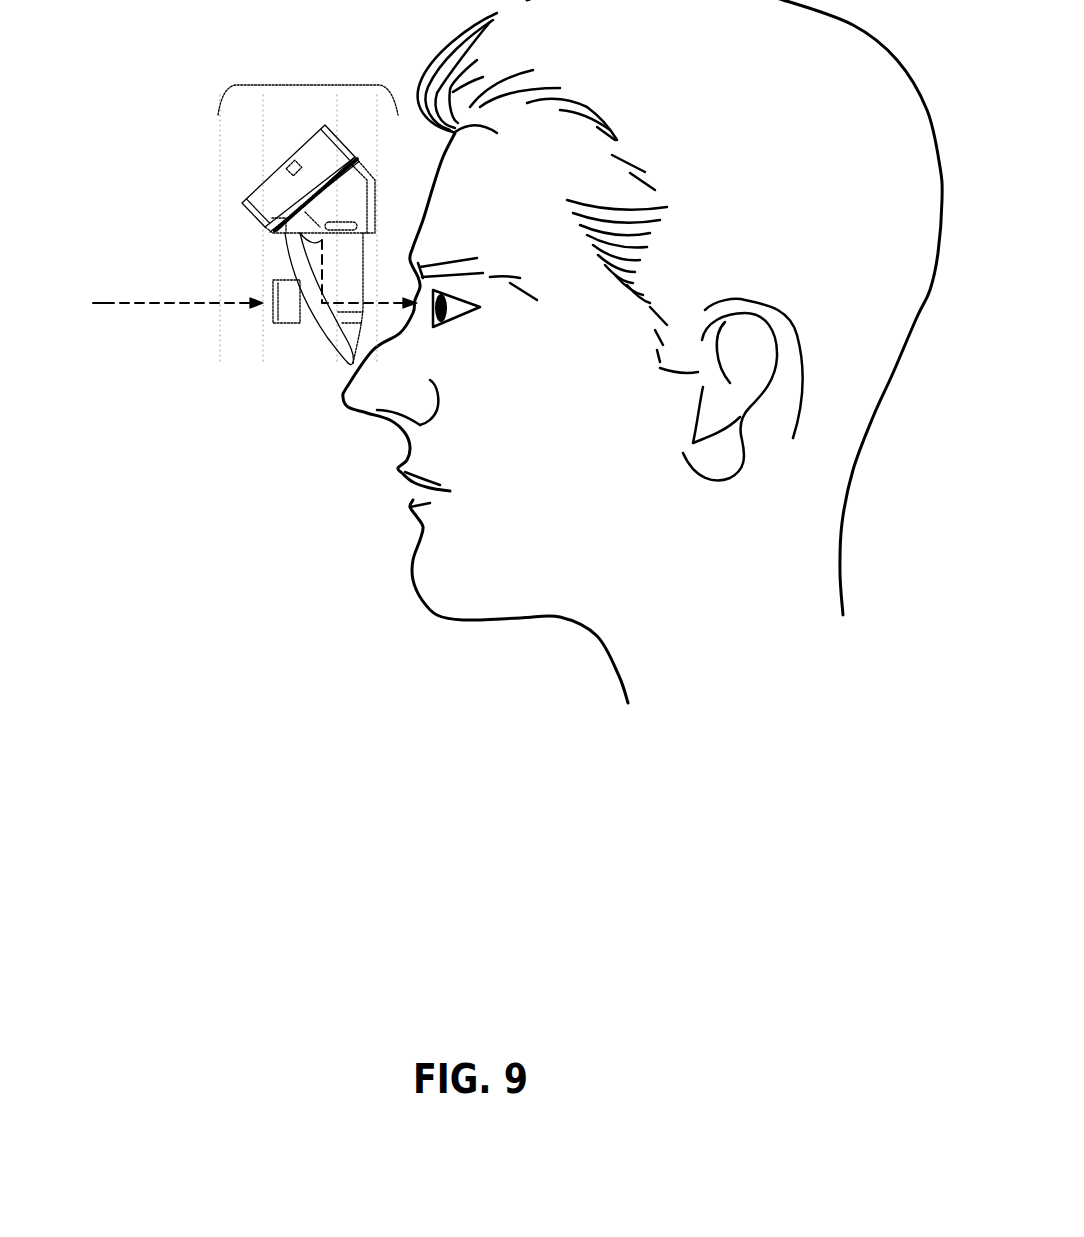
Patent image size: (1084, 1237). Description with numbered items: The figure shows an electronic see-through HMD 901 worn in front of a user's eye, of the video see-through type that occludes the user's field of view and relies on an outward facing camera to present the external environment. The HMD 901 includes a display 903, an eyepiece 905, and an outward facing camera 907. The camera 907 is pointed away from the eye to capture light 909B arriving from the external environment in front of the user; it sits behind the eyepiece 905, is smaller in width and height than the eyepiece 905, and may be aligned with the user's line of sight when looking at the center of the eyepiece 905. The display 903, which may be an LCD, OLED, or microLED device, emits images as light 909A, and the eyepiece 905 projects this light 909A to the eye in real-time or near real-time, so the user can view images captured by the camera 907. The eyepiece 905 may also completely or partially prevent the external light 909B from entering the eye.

The electronic see-through HMD 901 is at (307, 85).
The display 903 is at (268, 181).
The eyepiece 905 is at (342, 358).
The outward facing camera 907 is at (275, 323).
The light 909A is at (322, 238).
The light 909B is at (102, 303).